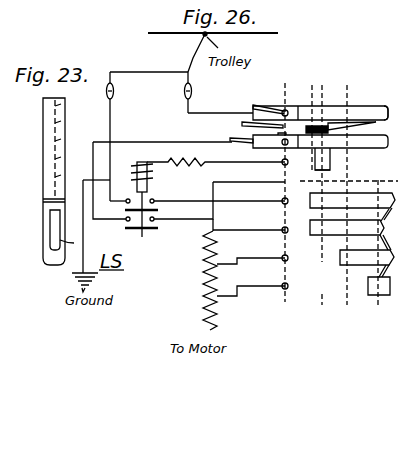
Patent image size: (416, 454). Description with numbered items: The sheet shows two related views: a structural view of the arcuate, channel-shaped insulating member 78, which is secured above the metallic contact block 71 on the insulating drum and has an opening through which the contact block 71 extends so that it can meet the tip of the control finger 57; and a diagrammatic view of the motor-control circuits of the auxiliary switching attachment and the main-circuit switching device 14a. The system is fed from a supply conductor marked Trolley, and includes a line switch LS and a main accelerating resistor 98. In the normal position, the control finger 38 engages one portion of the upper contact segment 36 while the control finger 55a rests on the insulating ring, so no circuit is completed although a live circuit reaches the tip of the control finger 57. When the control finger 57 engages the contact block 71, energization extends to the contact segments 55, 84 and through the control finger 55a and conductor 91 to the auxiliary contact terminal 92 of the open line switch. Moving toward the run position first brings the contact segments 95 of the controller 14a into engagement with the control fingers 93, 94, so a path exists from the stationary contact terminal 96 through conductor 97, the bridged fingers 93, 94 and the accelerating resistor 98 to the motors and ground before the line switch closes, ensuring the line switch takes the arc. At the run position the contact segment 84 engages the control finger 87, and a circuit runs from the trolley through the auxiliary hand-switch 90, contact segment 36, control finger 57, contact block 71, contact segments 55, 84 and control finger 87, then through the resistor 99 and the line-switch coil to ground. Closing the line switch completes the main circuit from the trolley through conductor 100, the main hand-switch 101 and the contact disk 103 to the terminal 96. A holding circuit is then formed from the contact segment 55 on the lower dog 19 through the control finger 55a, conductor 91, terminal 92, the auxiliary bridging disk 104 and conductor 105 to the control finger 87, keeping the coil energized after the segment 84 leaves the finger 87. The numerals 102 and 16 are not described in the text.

In FIG. 23, the insulating member 78 is at (49, 190).
In FIG. 26, the conductor 100 is at (165, 72).
In FIG. 26, the main hand-switch 101 is at (114, 92).
In FIG. 26, the conductor 102 is at (111, 141).
In FIG. 26, the auxiliary-circuit hand-switch 90 is at (192, 91).
In FIG. 26, the conductor 91 is at (186, 143).
In FIG. 26, the control finger 38 is at (258, 107).
In FIG. 26, the contact block 71 is at (246, 122).
In FIG. 26, the control finger 55a is at (230, 135).
In FIG. 26, the upper contact segment 36 is at (362, 112).
In FIG. 26, the switch member 16 is at (397, 116).
In FIG. 26, the control finger 57 is at (370, 124).
In FIG. 26, the lower dog 19 is at (332, 142).
In FIG. 26, the contact segment 55 is at (334, 146).
In FIG. 26, the contact segment 84 is at (316, 162).
In FIG. 26, the main-circuit switching device 14a is at (304, 360).
In FIG. 26, the contact segments 95 is at (363, 197).
In FIG. 26, the resistor 99 is at (196, 166).
In FIG. 26, the control finger 87 is at (282, 165).
In FIG. 26, the auxiliary bridging disk 104 is at (144, 206).
In FIG. 26, the contact disk 103 is at (125, 210).
In FIG. 26, the stationary contact terminal 92 is at (126, 221).
In FIG. 26, the stationary contact terminal 96 is at (155, 203).
In FIG. 26, the conductor 97 is at (219, 192).
In FIG. 26, the control finger 93 is at (283, 204).
In FIG. 26, the conductor 105 is at (203, 221).
In FIG. 26, the control finger 94 is at (282, 233).
In FIG. 26, the accelerating resistor 98 is at (202, 311).